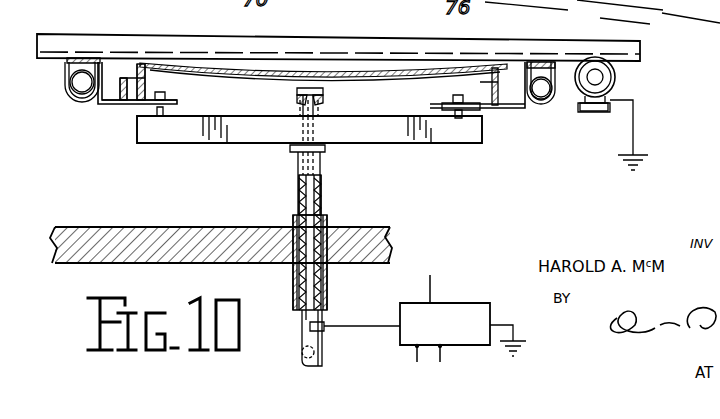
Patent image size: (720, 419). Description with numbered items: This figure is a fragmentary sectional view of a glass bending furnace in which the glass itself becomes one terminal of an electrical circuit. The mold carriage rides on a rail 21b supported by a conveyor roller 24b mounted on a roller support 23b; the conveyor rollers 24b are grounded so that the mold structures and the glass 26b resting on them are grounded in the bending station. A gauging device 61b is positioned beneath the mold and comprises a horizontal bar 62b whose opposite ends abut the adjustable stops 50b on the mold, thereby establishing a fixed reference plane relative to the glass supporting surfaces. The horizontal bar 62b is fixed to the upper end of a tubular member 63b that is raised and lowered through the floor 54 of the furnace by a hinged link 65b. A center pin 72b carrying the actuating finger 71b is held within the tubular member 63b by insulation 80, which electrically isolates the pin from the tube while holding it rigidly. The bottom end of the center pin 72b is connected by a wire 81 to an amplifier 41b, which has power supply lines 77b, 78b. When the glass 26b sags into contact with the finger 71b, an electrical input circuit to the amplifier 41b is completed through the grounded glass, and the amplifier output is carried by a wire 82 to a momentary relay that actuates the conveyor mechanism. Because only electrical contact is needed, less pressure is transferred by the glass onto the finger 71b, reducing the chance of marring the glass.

The rail 21b is at (97, 33).
The roller support 23b is at (586, 110).
The conveyor roller 24b is at (614, 79).
The adjustable stop 50b is at (190, 99).
The glass 26b is at (287, 82).
The actuating finger 71b is at (322, 90).
The gauging device 61b is at (143, 150).
The horizontal bar 62b is at (258, 144).
The tubular member 63b is at (322, 166).
The insulation 80 is at (322, 204).
The floor 54 is at (140, 226).
The hinged link 65b is at (332, 362).
The center pin 72b is at (303, 328).
The wire 81 is at (364, 324).
The amplifier 41b is at (446, 303).
The output wire 82 is at (429, 286).
The power supply line 77b is at (416, 365).
The power supply line 78b is at (442, 365).